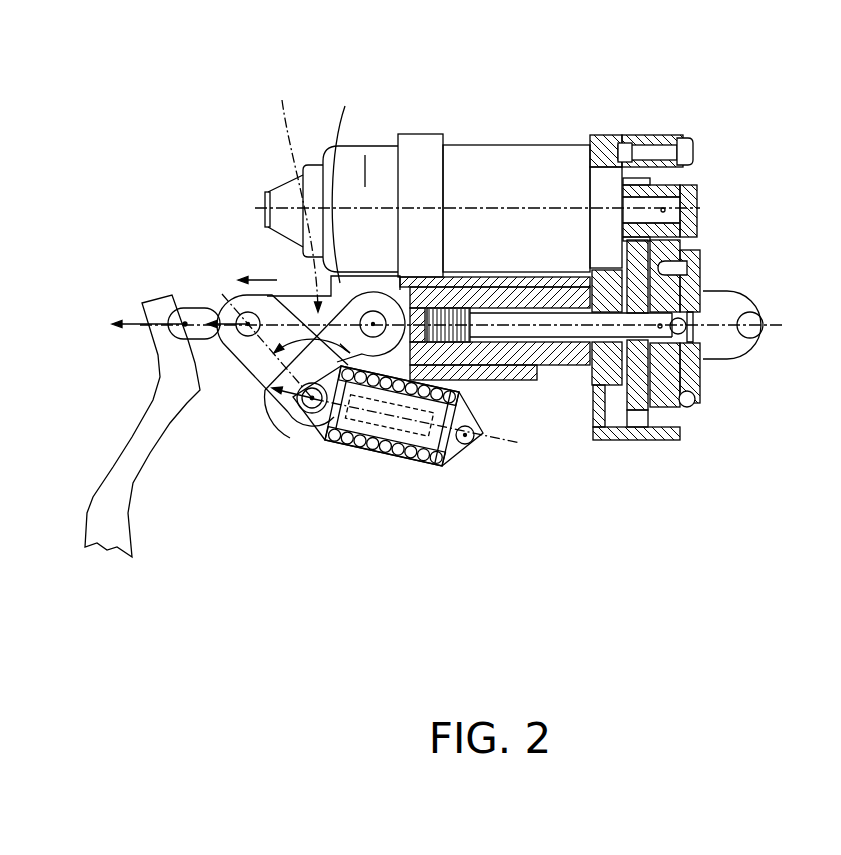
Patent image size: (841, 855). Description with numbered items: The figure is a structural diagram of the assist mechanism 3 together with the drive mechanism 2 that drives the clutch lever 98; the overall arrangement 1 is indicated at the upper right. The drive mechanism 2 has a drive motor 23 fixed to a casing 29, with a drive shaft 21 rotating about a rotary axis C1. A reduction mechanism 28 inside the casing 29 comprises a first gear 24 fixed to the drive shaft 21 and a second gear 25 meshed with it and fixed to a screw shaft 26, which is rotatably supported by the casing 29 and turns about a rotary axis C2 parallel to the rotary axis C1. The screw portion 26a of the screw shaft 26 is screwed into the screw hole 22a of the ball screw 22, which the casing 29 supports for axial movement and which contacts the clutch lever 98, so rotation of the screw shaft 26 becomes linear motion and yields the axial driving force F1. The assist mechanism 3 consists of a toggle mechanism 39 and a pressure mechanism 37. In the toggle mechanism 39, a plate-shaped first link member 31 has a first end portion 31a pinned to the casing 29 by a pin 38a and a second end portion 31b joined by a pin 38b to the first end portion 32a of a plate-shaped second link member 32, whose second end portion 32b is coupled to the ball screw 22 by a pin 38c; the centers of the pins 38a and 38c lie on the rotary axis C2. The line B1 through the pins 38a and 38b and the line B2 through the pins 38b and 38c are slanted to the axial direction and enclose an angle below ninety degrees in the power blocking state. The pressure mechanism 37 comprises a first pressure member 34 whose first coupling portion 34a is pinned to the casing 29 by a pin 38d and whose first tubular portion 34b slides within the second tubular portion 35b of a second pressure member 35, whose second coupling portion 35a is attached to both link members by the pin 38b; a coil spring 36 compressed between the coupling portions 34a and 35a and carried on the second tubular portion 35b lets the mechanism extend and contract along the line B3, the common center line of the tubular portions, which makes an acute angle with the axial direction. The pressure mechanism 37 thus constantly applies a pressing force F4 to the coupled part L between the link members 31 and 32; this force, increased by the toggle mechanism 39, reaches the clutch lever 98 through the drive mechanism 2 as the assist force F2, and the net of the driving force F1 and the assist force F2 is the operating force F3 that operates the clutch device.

The actuator device 1 is at (770, 103).
The drive mechanism 2 is at (534, 123).
The assist mechanism 3 is at (273, 552).
The drive shaft 21 is at (666, 121).
The ball screw 22 is at (462, 338).
The screw hole 22a is at (545, 418).
The drive motor 23 is at (478, 158).
The first gear 24 is at (697, 188).
The second gear 25 is at (697, 221).
The screw shaft 26 is at (521, 398).
The screw portion 26a is at (535, 338).
The reduction mechanism 28 is at (729, 199).
The casing 29 is at (602, 131).
The first link member 31 is at (324, 296).
The first end portion 31a is at (382, 283).
The second end portion 31b is at (318, 430).
The second link member 32 is at (243, 358).
The first end portion 32a is at (265, 420).
The second end portion 32b is at (240, 294).
The first pressure member 34 is at (470, 473).
The first coupling portion 34a is at (470, 453).
The first tubular portion 34b is at (413, 460).
The second pressure member 35 is at (411, 478).
The second coupling portion 35a is at (327, 441).
The second tubular portion 35b is at (385, 462).
The coil spring 36 is at (386, 455).
The pressure mechanism 37 is at (385, 466).
The pin 38a is at (350, 300).
The pin 38b is at (320, 425).
The pin 38c is at (190, 342).
The pin 38d is at (463, 458).
The toggle mechanism 39 is at (293, 194).
The clutch lever 98 is at (145, 443).
The line B1 is at (362, 302).
The line B2 is at (262, 360).
The line B3 is at (460, 462).
The coupled part L is at (305, 413).
The rotary axis C1 is at (682, 140).
The rotary axis C2 is at (690, 407).
The driving force F1 is at (272, 278).
The assist force F2 is at (214, 308).
The operating force F3 is at (133, 316).
The pressing force F4 is at (272, 398).